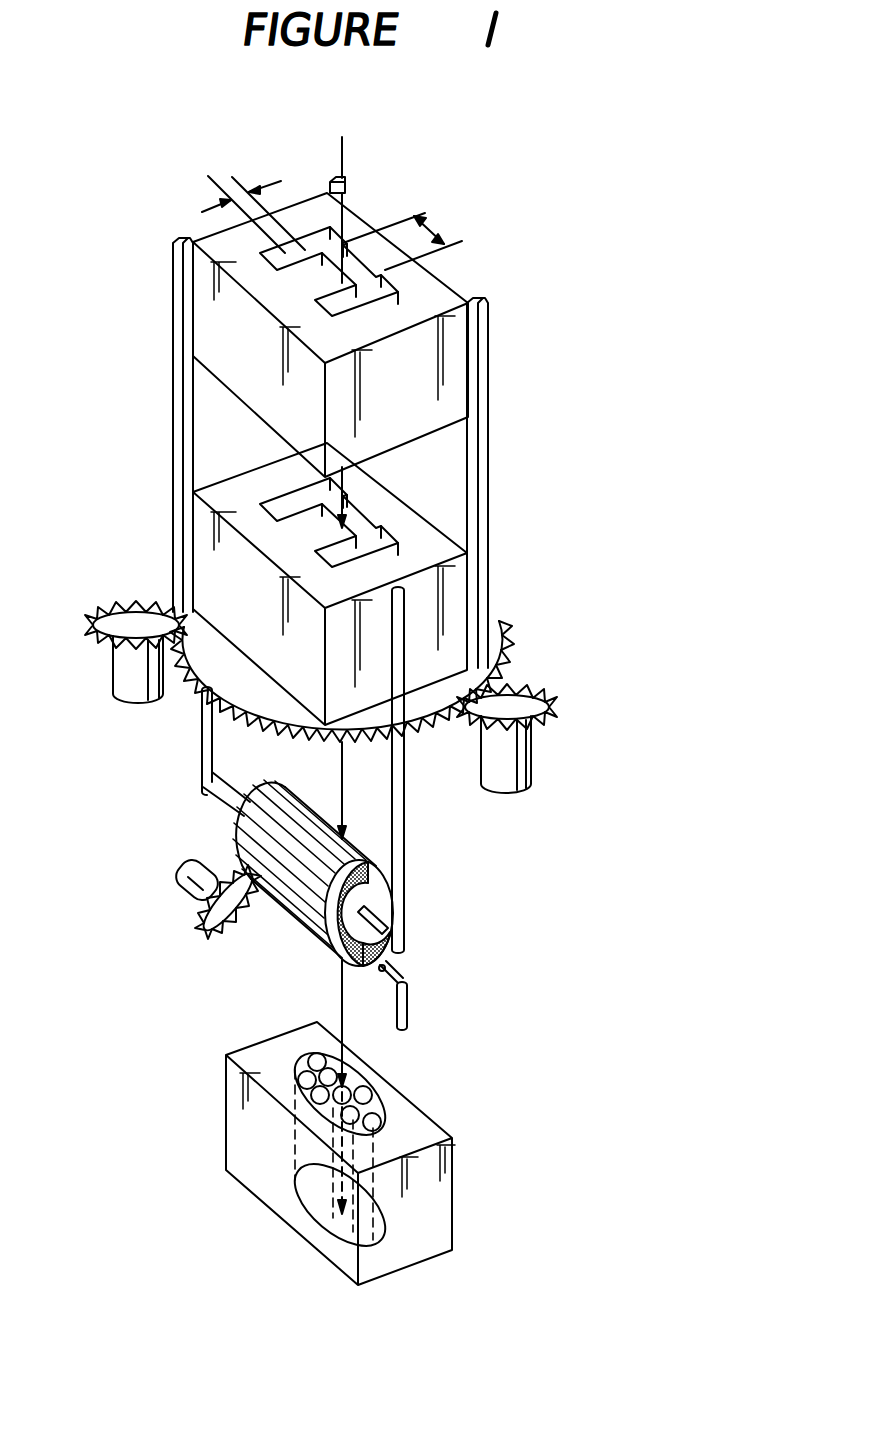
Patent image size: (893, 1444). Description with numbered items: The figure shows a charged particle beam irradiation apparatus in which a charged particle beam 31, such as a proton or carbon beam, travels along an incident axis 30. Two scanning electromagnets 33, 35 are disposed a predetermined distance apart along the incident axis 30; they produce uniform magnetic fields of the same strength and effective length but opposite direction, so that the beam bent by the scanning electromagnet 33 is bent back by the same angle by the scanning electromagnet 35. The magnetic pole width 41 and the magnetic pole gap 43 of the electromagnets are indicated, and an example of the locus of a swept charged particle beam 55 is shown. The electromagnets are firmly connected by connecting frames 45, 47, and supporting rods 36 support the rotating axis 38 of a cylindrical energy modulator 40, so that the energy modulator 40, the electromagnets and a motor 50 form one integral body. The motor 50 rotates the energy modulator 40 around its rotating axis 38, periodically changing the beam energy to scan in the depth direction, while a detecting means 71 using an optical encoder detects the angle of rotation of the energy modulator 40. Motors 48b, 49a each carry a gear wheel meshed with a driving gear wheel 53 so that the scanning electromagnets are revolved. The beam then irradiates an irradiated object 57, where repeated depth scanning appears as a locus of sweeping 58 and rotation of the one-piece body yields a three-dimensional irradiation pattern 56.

The incident axis 30 is at (341, 138).
The charged particle beam 31 is at (343, 170).
The scanning electromagnet 33 is at (455, 362).
The scanning electromagnet 35 is at (457, 617).
The supporting rods 36 is at (404, 790).
The rotating axis 38 is at (384, 918).
The energy modulator 40 is at (294, 906).
The magnetic pole width 41 is at (417, 231).
The magnetic pole gap 43 is at (240, 197).
The connecting frame 45 is at (178, 400).
The connecting frame 47 is at (490, 470).
The motor 48b is at (505, 758).
The motor 49a is at (124, 663).
The motor 50 is at (181, 893).
The driving gear wheel 53 is at (180, 683).
The locus of a swept charged particle beam 55 is at (366, 1098).
The three-dimensional irradiation pattern 56 is at (294, 1070).
The irradiated object 57 is at (453, 1207).
The locus of sweeping 58 is at (325, 1192).
The detecting means 71 is at (410, 1005).